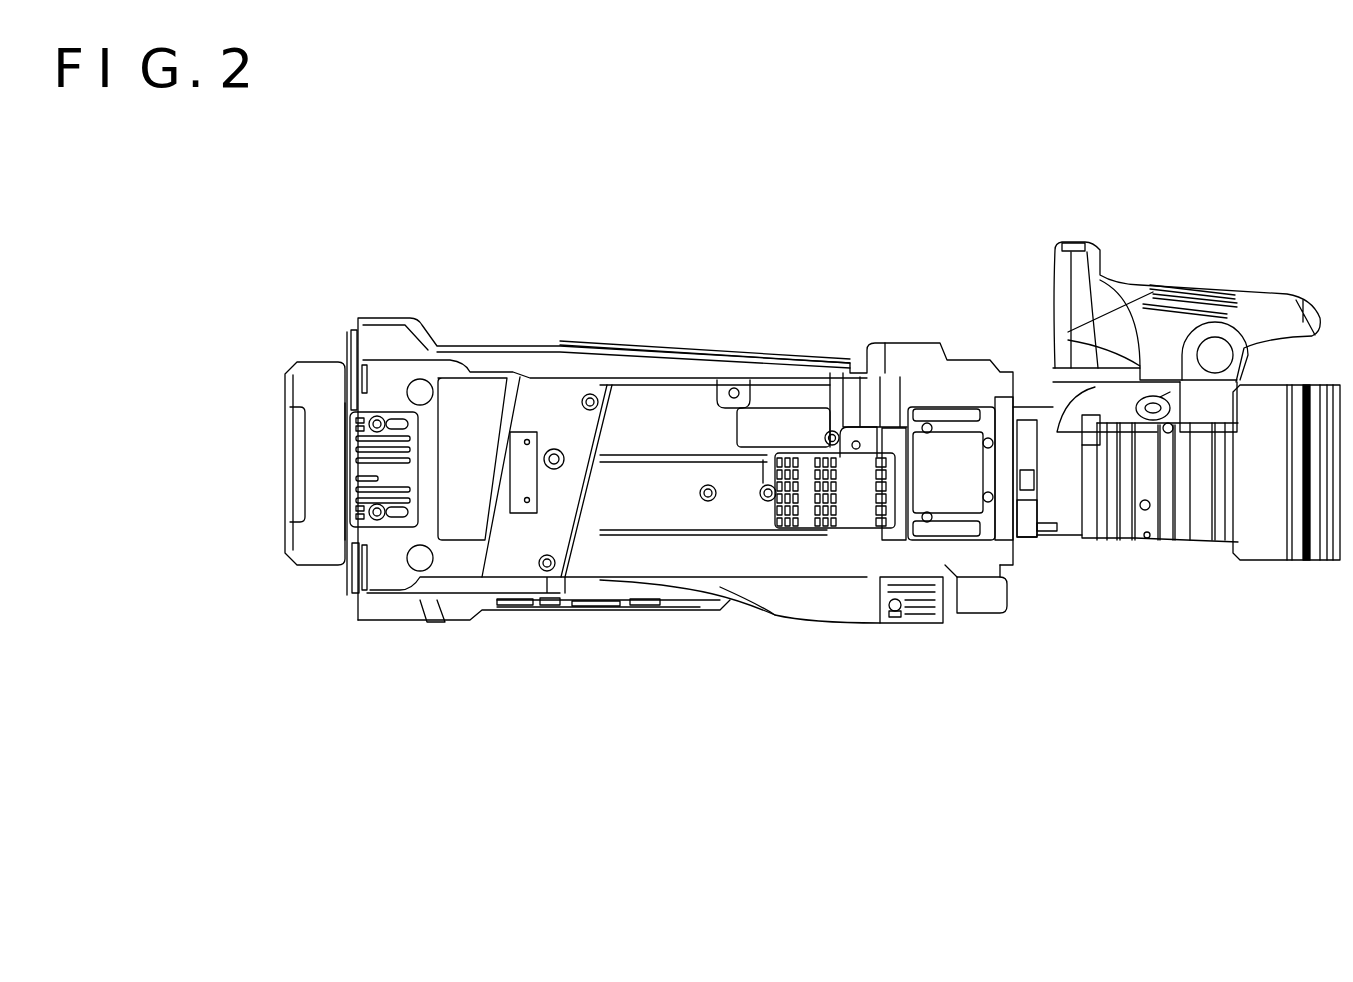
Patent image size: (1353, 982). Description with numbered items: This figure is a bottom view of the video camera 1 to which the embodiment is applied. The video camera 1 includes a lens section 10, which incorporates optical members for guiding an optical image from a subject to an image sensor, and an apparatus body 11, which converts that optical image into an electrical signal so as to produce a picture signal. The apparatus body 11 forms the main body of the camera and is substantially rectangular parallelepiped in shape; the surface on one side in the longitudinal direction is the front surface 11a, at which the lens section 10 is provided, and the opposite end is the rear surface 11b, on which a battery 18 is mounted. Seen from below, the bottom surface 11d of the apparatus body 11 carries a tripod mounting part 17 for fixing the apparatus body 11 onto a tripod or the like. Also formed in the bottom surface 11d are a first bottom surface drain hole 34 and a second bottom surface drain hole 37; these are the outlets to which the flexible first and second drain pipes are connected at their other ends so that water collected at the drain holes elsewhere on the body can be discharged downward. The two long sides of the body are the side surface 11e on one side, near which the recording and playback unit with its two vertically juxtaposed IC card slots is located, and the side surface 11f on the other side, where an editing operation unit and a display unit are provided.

The video camera 1 is at (1250, 165).
The lens section 10 is at (1263, 518).
The apparatus body 11 is at (739, 478).
The front surface 11a is at (1040, 545).
The rear surface 11b is at (346, 578).
The bottom surface 11d is at (743, 510).
The side surface 11e is at (676, 346).
The side surface 11f is at (640, 612).
The tripod mounting part 17 is at (957, 476).
The battery 18 is at (329, 532).
The first bottom surface drain hole 34 is at (832, 430).
The second bottom surface drain hole 37 is at (554, 448).